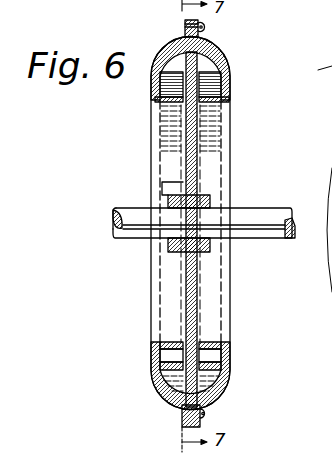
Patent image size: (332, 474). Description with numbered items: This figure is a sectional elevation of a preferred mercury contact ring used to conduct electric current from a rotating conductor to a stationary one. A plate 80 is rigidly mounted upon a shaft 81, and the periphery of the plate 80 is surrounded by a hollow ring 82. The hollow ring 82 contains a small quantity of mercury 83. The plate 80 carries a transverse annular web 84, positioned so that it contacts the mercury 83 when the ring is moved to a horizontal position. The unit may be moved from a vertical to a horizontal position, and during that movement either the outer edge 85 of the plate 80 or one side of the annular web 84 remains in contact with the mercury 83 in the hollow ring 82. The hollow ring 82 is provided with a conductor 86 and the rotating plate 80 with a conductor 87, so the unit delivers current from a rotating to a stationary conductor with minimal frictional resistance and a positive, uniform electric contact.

The plate 80 is at (182, 278).
The shaft 81 is at (257, 226).
The hollow ring 82 is at (228, 352).
The mercury 83 is at (220, 393).
The transverse annular web 84 is at (160, 363).
The outer edge 85 is at (186, 406).
The conductor 86 is at (232, 110).
The conductor 87 is at (127, 200).